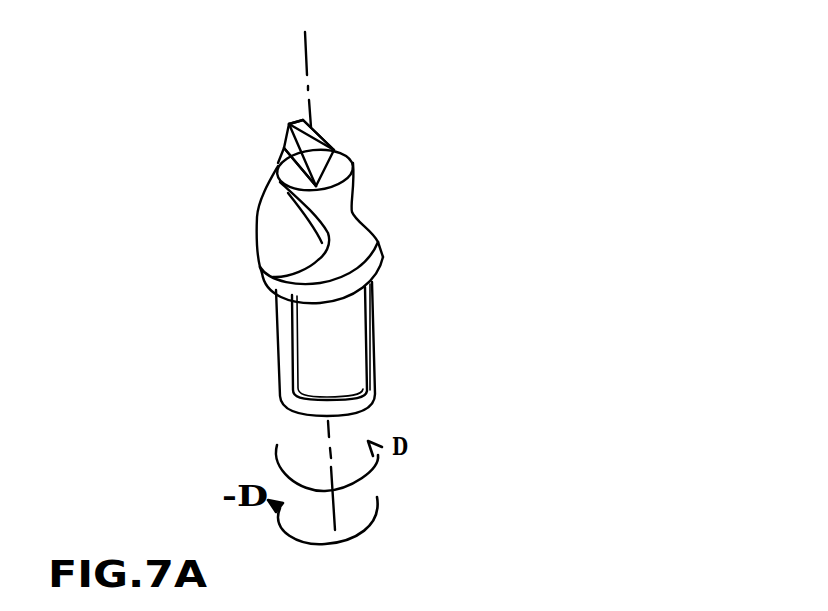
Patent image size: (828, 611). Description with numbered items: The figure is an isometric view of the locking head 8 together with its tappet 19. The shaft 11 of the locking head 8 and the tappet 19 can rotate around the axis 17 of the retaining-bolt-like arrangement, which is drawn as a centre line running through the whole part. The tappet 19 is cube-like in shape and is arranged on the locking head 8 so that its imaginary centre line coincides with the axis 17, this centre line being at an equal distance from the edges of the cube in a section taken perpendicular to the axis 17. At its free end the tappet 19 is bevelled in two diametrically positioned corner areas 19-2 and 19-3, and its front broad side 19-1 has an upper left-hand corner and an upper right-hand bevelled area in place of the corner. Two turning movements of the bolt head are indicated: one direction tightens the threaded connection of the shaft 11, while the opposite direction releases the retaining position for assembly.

The locking head 8 is at (382, 258).
The shaft 11 is at (283, 340).
The axis 17 is at (326, 269).
The tappet 19 is at (297, 160).
The front broad side 19-1 is at (293, 146).
The bevelled corner area 19-2 is at (204, 210).
The bevelled corner area 19-3 is at (318, 133).